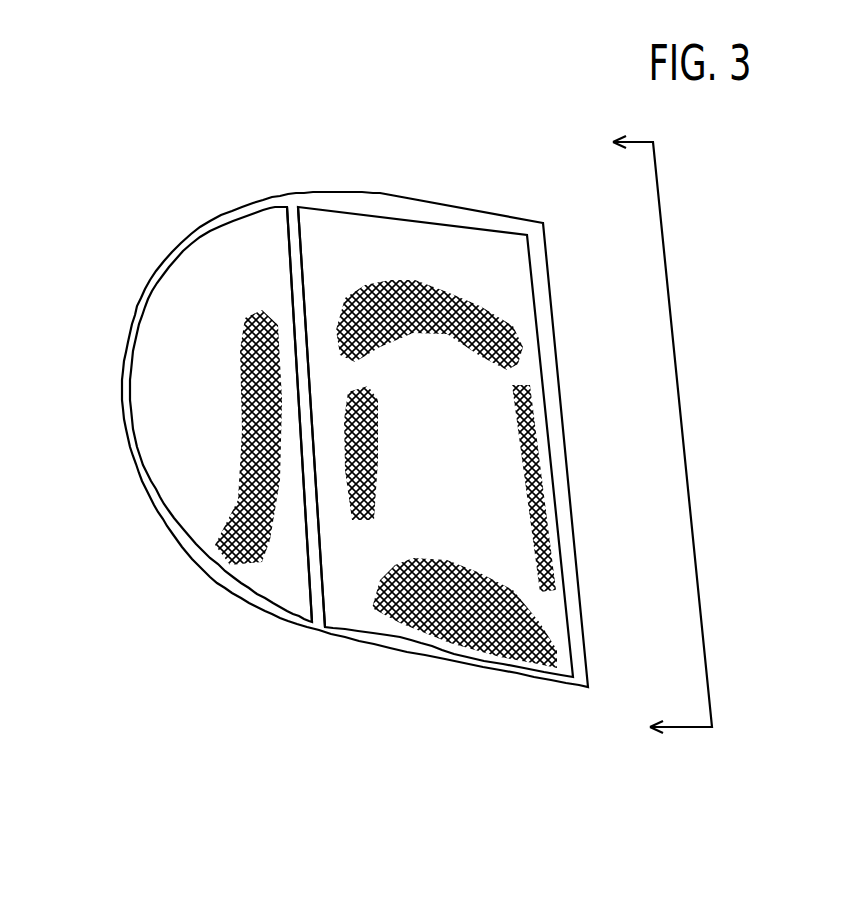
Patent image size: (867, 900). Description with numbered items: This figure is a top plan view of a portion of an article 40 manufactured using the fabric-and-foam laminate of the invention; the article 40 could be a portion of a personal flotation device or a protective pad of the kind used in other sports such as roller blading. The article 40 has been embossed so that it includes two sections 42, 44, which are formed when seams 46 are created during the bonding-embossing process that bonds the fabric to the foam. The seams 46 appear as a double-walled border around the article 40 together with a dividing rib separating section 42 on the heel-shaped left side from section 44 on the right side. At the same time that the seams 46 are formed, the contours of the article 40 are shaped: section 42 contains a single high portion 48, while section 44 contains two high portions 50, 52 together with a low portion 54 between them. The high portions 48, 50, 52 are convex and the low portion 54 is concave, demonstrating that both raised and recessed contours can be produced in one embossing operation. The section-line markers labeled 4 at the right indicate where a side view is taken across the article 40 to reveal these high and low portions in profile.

The article 40 is at (216, 172).
The section 42 is at (258, 233).
The section 44 is at (420, 233).
The seams 46 is at (172, 243).
The high portion 48 is at (225, 347).
The high portion 50 is at (432, 272).
The high portion 52 is at (453, 532).
The low portion 54 is at (430, 417).
The section line 4- 4 is at (647, 437).